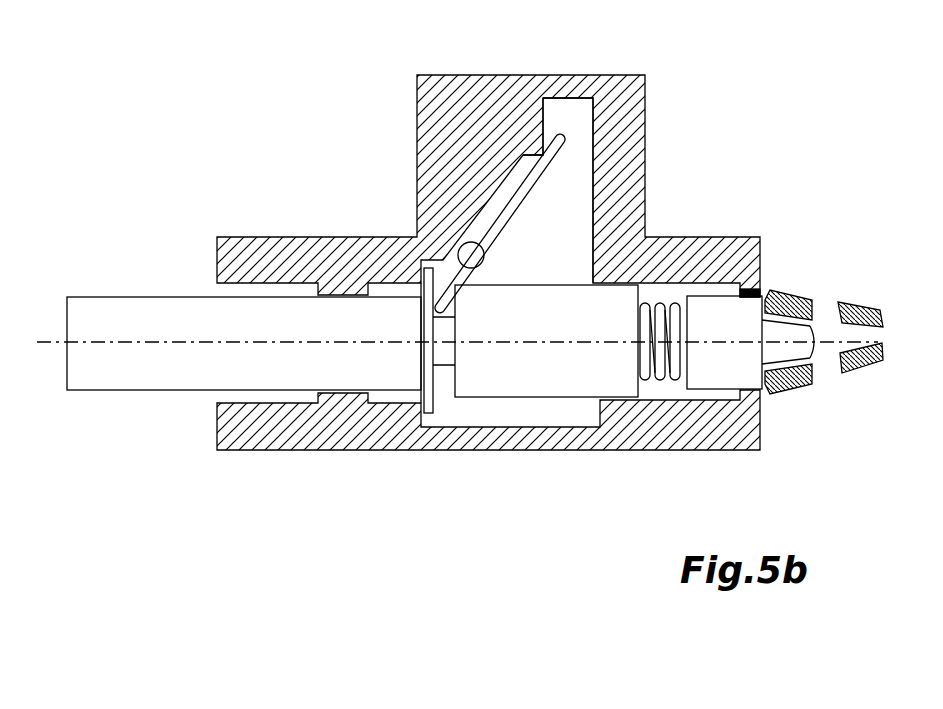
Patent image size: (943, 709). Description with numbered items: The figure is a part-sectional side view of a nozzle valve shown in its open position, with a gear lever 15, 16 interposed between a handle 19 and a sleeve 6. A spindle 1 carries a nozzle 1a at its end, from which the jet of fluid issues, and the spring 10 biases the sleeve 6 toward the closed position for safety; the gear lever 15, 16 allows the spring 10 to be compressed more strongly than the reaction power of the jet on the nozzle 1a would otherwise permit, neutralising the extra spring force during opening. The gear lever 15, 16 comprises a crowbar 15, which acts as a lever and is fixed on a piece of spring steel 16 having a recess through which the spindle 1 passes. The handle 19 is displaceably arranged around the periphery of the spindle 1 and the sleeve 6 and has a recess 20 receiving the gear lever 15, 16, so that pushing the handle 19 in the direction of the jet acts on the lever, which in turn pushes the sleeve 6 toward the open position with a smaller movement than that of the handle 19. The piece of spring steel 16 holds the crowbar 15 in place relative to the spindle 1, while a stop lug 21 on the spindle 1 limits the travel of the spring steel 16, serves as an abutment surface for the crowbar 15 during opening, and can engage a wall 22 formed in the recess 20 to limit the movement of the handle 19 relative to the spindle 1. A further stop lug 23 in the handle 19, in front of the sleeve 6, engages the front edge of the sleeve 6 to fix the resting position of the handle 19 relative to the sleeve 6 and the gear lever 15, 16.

The spindle 1 is at (288, 378).
The nozzle 1a is at (802, 301).
The sleeve 6 is at (576, 360).
The spring 10 is at (662, 372).
The crowbar 15 is at (517, 193).
The piece of spring steel 16 is at (434, 321).
The handle 19 is at (625, 140).
The recess 20 is at (597, 118).
The stop lug 21 is at (427, 371).
The wall 22 is at (420, 269).
The stop lug 23 is at (767, 284).